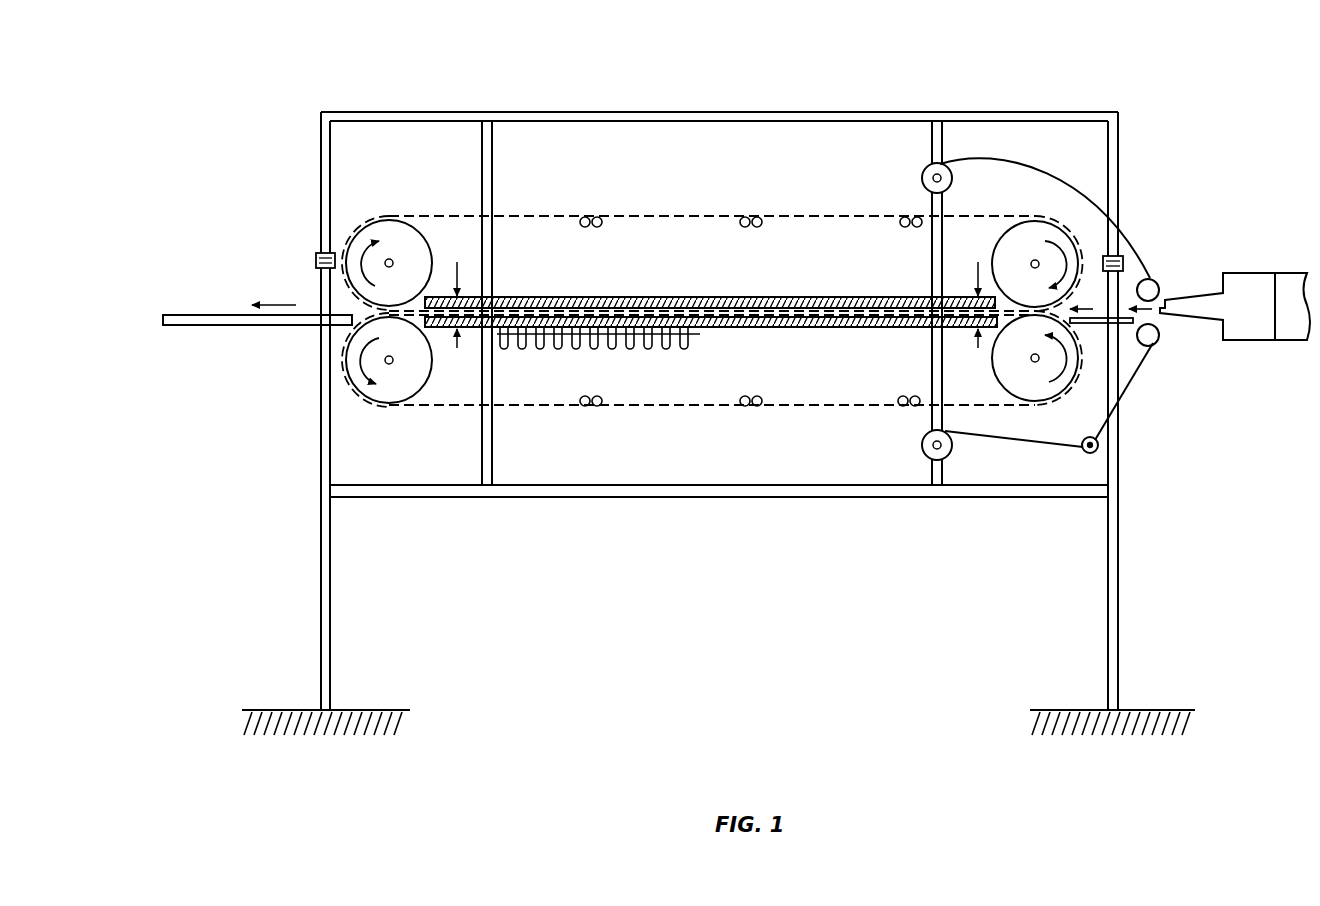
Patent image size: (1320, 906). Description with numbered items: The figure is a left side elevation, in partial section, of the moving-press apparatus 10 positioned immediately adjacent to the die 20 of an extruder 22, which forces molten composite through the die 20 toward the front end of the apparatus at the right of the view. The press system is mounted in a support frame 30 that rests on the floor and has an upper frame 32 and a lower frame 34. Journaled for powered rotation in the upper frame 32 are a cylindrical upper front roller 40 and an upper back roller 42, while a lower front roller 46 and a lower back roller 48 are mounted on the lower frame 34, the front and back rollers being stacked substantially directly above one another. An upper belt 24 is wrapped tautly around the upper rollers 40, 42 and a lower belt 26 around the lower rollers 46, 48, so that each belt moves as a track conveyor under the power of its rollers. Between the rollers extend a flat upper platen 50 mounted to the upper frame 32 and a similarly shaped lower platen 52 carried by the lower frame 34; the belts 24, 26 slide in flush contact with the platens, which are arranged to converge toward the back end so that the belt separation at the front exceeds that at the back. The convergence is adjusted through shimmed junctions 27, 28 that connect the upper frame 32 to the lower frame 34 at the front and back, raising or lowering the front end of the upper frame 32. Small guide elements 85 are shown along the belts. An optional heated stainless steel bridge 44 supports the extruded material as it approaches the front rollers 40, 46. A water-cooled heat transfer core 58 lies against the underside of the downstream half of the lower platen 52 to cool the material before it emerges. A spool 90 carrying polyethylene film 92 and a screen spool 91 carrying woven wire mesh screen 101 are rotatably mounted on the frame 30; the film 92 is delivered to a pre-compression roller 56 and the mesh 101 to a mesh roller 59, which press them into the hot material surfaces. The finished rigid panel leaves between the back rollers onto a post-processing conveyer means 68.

The apparatus 10 is at (822, 94).
The die 20 is at (1181, 291).
The extruder 22 is at (1250, 338).
The upper belt 24 is at (525, 216).
The lower belt 26 is at (650, 406).
The shimmed junction 27 is at (1122, 255).
The shimmed junction 28 is at (318, 258).
The frame 30 is at (591, 94).
The upper frame 32 is at (325, 195).
The lower frame 34 is at (321, 413).
The upper front roller 40 is at (1036, 222).
The upper back roller 42 is at (390, 222).
The bridge 44 is at (1097, 325).
The lower front roller 46 is at (1035, 400).
The lower back roller 48 is at (390, 400).
The upper platen 50 is at (690, 297).
The lower platen 52 is at (838, 329).
The pre-compression roller 56 is at (1150, 279).
The heat transfer core 58 is at (572, 350).
The mesh roller 59 is at (1159, 338).
The post-processing conveyer means 68 is at (262, 327).
The guide rollers 85 is at (752, 220).
The spool 90 is at (922, 172).
The screen spool 91 is at (922, 447).
The polyethylene film 92 is at (1092, 190).
The woven wire mesh screen 101 is at (1128, 397).